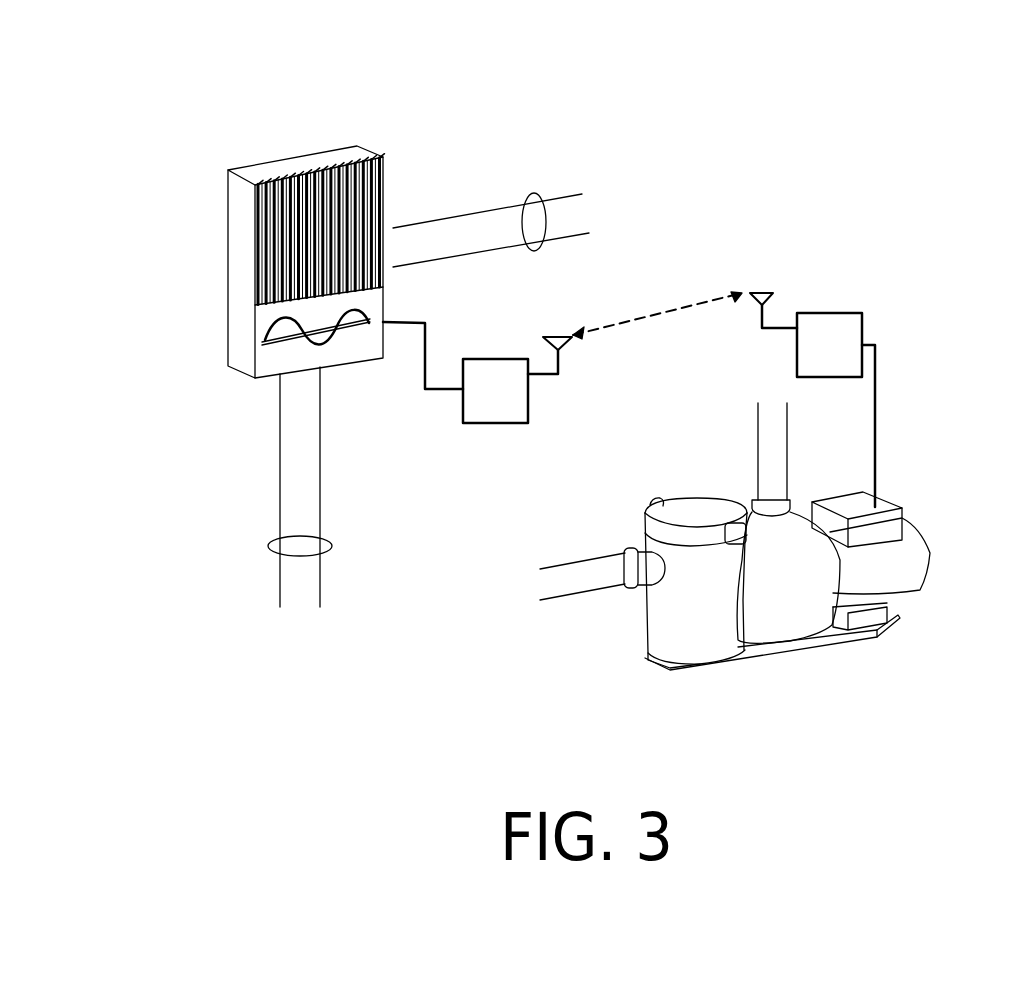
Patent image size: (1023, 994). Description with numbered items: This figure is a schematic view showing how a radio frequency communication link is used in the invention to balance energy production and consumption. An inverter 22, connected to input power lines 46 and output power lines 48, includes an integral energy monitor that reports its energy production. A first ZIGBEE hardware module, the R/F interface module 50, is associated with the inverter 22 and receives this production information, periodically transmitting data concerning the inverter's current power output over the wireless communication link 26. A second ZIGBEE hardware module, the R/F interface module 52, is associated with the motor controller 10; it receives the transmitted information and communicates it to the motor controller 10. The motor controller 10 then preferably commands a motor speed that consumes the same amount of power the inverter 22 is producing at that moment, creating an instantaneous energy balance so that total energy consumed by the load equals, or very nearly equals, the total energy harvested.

The motor controller 10 is at (873, 533).
The inverter 22 is at (307, 165).
The communication link 26 is at (639, 319).
The input power lines 46 is at (268, 546).
The output power lines 48 is at (534, 193).
The R/F interface module 50 is at (489, 394).
The R/F interface module 52 is at (828, 348).